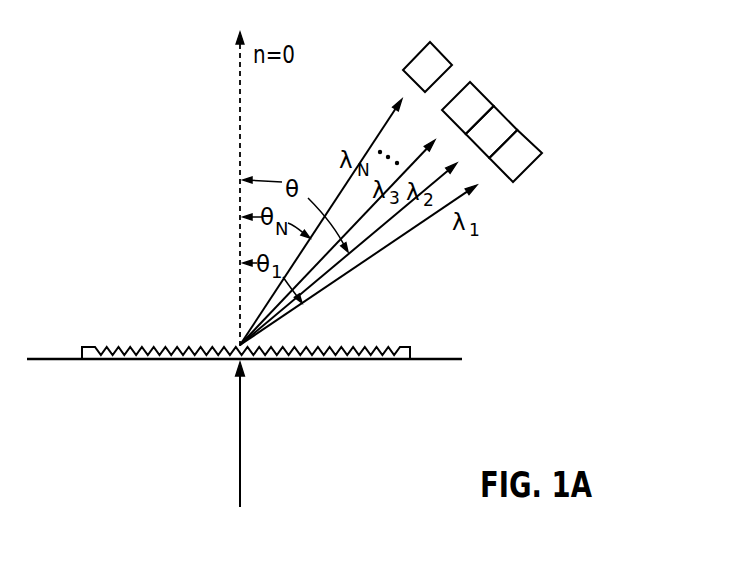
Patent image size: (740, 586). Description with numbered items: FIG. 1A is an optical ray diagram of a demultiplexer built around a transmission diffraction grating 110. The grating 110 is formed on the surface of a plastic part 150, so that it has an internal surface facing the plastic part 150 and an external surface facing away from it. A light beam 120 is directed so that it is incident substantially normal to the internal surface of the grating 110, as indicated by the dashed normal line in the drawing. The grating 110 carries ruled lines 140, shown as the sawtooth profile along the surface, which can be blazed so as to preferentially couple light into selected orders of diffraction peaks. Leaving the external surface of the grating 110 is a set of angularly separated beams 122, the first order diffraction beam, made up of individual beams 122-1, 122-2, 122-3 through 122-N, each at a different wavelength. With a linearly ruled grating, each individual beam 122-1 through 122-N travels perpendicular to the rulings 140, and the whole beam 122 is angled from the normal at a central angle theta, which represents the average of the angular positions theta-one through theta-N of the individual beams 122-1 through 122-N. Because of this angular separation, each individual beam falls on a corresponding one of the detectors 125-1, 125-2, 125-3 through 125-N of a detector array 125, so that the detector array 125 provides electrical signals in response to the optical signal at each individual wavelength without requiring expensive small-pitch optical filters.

The transmission diffraction grating 110 is at (430, 359).
The light beam 120 is at (241, 405).
The angularly separated beams 122 is at (377, 220).
The individual beam 122-1 is at (417, 230).
The individual beam 122-2 is at (393, 218).
The individual beam 122-3 is at (368, 208).
The individual beam 122-N is at (372, 143).
The detector array 125 is at (534, 115).
The detector 125-1 is at (537, 146).
The detector 125-2 is at (508, 120).
The detector 125-3 is at (483, 94).
The detector 125-N is at (452, 65).
The ruled lines 140 is at (148, 345).
The plastic part 150 is at (136, 435).